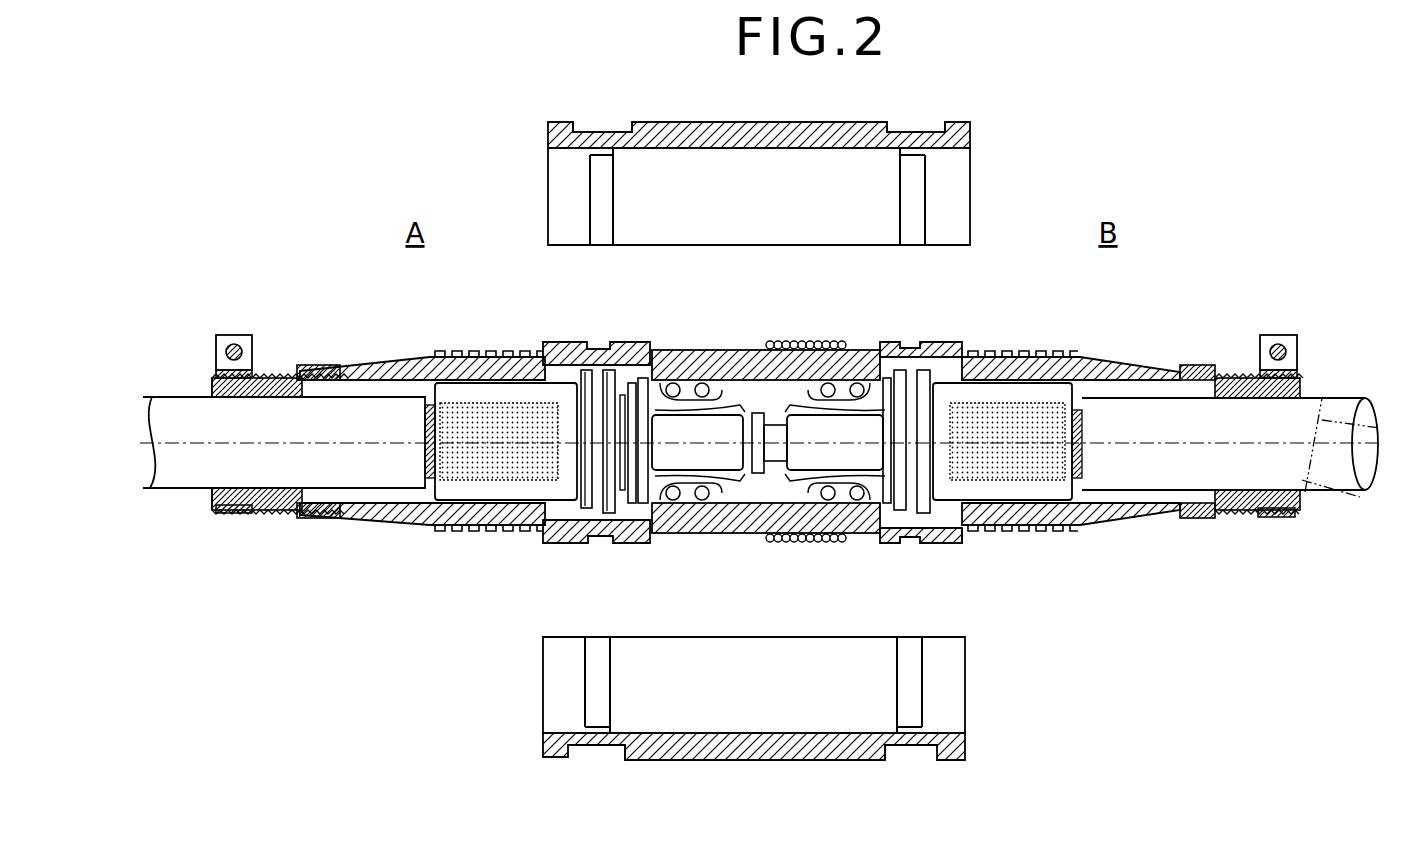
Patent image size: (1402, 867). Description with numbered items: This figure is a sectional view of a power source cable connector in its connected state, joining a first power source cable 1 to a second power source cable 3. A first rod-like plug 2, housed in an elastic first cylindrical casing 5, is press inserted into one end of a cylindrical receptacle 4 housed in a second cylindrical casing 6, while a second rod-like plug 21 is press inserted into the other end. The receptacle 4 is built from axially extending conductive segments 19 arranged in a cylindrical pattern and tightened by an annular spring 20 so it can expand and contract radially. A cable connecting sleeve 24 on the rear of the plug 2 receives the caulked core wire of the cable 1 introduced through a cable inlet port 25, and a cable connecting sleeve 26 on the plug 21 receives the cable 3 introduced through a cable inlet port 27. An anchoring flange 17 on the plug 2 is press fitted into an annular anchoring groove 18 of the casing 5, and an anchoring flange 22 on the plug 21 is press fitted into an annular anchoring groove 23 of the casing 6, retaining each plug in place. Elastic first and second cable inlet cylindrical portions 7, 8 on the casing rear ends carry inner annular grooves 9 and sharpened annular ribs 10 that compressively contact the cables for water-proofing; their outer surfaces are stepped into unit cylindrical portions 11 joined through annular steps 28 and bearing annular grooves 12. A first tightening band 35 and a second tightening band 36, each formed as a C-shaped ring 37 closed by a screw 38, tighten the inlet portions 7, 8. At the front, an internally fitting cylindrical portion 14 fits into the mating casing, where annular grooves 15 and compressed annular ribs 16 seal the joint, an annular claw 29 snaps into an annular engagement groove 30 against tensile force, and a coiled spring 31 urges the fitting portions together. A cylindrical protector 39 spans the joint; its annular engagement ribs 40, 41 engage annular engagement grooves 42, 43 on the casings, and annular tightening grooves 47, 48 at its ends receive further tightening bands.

The first power source cable 1 is at (402, 410).
The first rod-like plug 2 is at (640, 382).
The second power source cable 3 is at (1070, 405).
The cylindrical receptacle 4 is at (705, 376).
The first cylindrical casing 5 is at (522, 357).
The second cylindrical casing 6 is at (970, 357).
The first cable inlet cylindrical portion 7 is at (272, 380).
The second cable inlet cylindrical portion 8 is at (1235, 385).
The annular grooves 9 is at (300, 512).
The annular ribs 10 is at (270, 514).
The unit cylindrical portions 11 is at (352, 372).
The annular grooves 12 is at (315, 370).
The internally fitting cylindrical portion 14 is at (670, 384).
The annular grooves 15 is at (716, 535).
The annular ribs 16 is at (766, 515).
The anchoring flange 17 is at (584, 484).
The annular anchoring groove 18 is at (608, 514).
The conductive segments 19 is at (776, 496).
The annular spring 20 is at (643, 505).
The second rod-like plug 21 is at (810, 456).
The anchoring flange 22 is at (926, 545).
The annular anchoring groove 23 is at (950, 545).
The cable connecting sleeve 24 is at (478, 495).
The cable inlet port 25 is at (212, 492).
The cable connecting sleeve 26 is at (1022, 495).
The cable inlet port 27 is at (1312, 494).
The annular steps 28 is at (338, 522).
The annular claw 29 is at (850, 366).
The annular engagement groove 30 is at (770, 344).
The coiled spring 31 is at (810, 344).
The first tightening band 35 is at (218, 372).
The second tightening band 36 is at (1297, 373).
The C-shaped ring 37 is at (232, 514).
The screw 38 is at (233, 347).
The cylindrical protector 39 is at (962, 132).
The annular engagement rib 40 is at (600, 196).
The annular engagement rib 41 is at (915, 203).
The annular engagement groove 42 is at (596, 345).
The annular engagement groove 43 is at (915, 342).
The annular tightening groove 47 is at (602, 128).
The annular tightening groove 48 is at (905, 130).